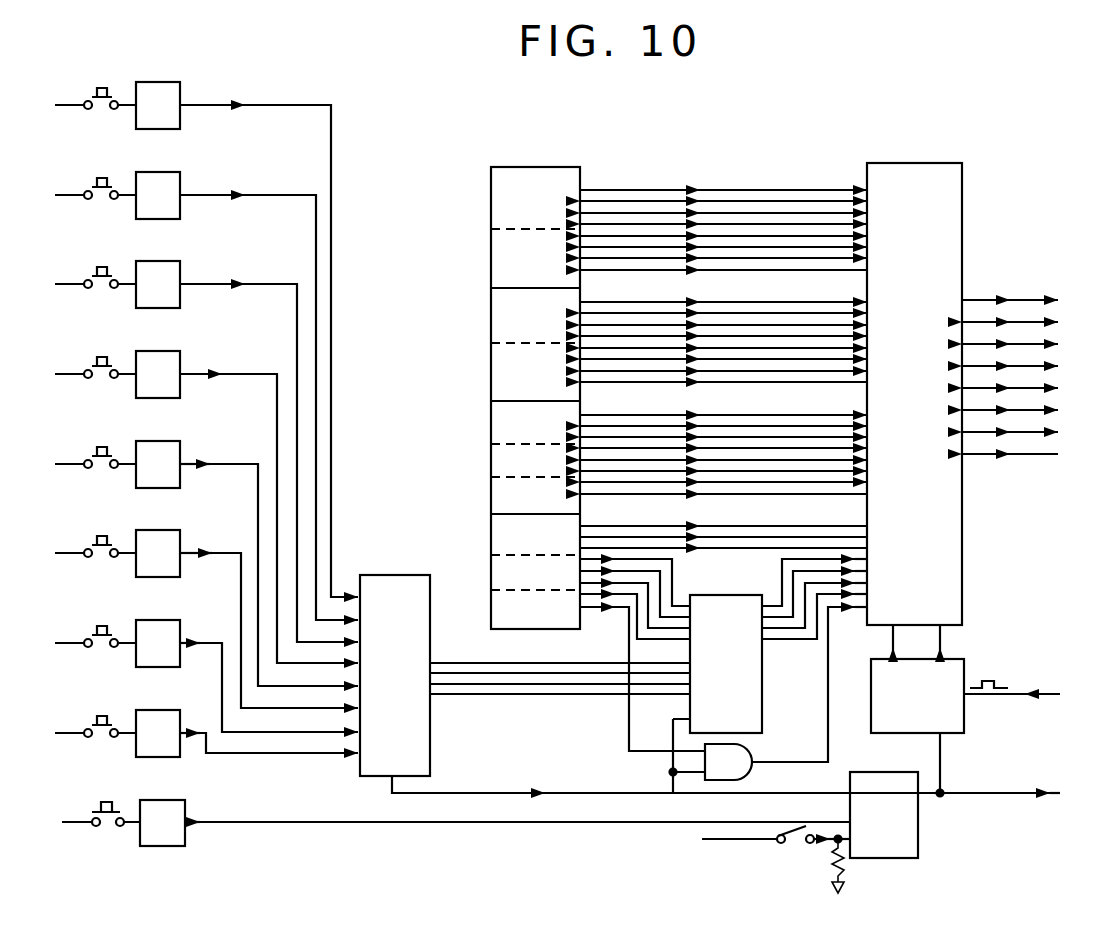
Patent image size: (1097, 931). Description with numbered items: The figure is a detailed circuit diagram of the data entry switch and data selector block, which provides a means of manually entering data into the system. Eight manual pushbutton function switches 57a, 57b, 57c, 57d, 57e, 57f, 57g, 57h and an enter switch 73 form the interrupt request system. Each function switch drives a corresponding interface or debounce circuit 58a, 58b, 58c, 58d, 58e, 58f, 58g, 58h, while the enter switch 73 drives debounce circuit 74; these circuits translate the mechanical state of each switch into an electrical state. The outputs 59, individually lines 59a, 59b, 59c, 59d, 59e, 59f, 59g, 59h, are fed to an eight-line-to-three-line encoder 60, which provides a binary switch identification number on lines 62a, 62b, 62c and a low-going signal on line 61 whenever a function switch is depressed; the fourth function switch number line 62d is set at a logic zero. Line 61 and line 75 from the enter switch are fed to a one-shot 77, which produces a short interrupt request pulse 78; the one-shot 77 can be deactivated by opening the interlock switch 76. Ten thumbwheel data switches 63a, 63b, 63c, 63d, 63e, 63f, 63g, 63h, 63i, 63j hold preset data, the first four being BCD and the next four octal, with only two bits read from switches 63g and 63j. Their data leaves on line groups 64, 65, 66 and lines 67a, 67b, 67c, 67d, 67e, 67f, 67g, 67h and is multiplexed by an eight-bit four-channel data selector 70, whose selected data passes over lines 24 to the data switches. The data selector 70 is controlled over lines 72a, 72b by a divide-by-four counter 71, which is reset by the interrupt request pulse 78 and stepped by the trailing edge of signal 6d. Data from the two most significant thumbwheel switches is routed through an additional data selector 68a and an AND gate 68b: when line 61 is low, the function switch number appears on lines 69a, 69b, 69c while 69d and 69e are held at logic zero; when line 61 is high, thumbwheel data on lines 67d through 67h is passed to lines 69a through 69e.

The function switch 57a is at (108, 87).
The function switch 57b is at (108, 177).
The function switch 57c is at (108, 266).
The function switch 57d is at (108, 356).
The function switch 57e is at (108, 446).
The function switch 57f is at (108, 535).
The function switch 57g is at (108, 625).
The function switch 57h is at (108, 715).
The debounce circuit 58a is at (158, 82).
The debounce circuit 58b is at (158, 172).
The debounce circuit 58c is at (158, 261).
The debounce circuit 58d is at (158, 351).
The debounce circuit 58e is at (158, 441).
The debounce circuit 58f is at (158, 530).
The debounce circuit 58g is at (158, 620).
The debounce circuit 58h is at (158, 710).
The debounce circuit outputs 59 is at (6, 462).
The output line 59a is at (292, 108).
The output line 59b is at (280, 198).
The output line 59c is at (272, 287).
The output line 59d is at (270, 377).
The output line 59e is at (237, 467).
The output line 59f is at (228, 557).
The output line 59g is at (210, 646).
The output line 59h is at (260, 757).
The 8-line-to-3-line encoder 60 is at (403, 573).
The line 61 is at (499, 790).
The switch identification line 62a is at (488, 660).
The switch identification line 62b is at (568, 670).
The switch identification line 62c is at (502, 686).
The fourth function switch number line 62d is at (578, 696).
The thumbwheel data switch 63a is at (491, 190).
The thumbwheel data switch 63b is at (491, 258).
The thumbwheel data switch 63c is at (491, 318).
The thumbwheel data switch 63d is at (491, 373).
The thumbwheel data switch 63e is at (491, 421).
The thumbwheel data switch 63f is at (491, 455).
The thumbwheel data switch 63g is at (491, 493).
The thumbwheel data switch 63h is at (491, 535).
The thumbwheel data switch 63i is at (491, 575).
The thumbwheel data switch 63j is at (491, 607).
The thumbwheel data lines 64 is at (650, 185).
The thumbwheel data lines 65 is at (646, 300).
The thumbwheel data lines 66 is at (644, 414).
The thumbwheel data line 67a is at (652, 525).
The thumbwheel data line 67b is at (765, 512).
The thumbwheel data line 67c is at (820, 547).
The thumbwheel data line 67d is at (673, 568).
The thumbwheel data line 67e is at (662, 580).
The thumbwheel data line 67f is at (636, 604).
The thumbwheel data line 67g is at (634, 630).
The thumbwheel data line 67h is at (630, 651).
The data selector 68a is at (764, 705).
The AND gate 68b is at (750, 748).
The data line 69a is at (784, 567).
The data line 69b is at (792, 585).
The data line 69c is at (770, 632).
The data line 69d is at (812, 642).
The AND gate output 69e is at (830, 727).
The data selector 70 is at (964, 540).
The lines 24 is at (1028, 296).
The divide-by-four counter 71 is at (966, 672).
The counter output line 72a is at (890, 645).
The counter output line 72b is at (945, 645).
The signal 6d is at (1042, 694).
The enter switch 73 is at (116, 803).
The debounce circuit 74 is at (162, 800).
The line 75 is at (290, 821).
The interlock switch 76 is at (820, 846).
The one-shot 77 is at (918, 850).
The interrupt request pulse 78 is at (998, 795).